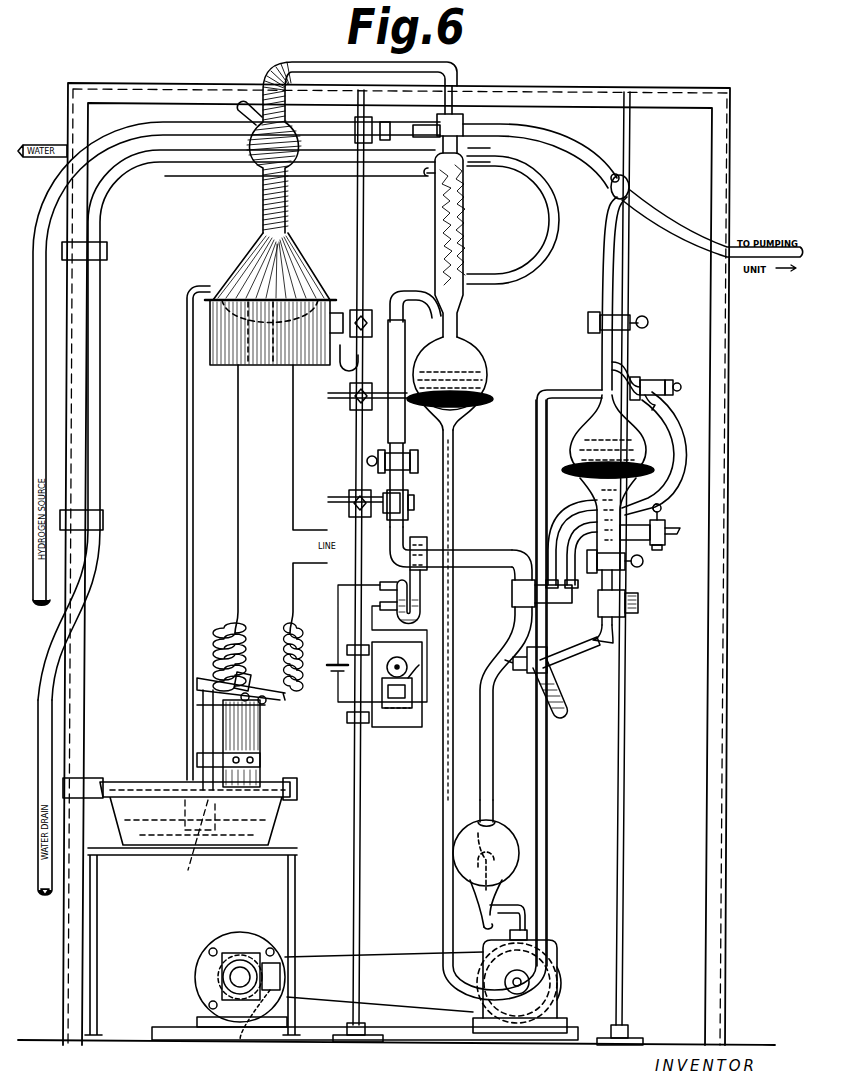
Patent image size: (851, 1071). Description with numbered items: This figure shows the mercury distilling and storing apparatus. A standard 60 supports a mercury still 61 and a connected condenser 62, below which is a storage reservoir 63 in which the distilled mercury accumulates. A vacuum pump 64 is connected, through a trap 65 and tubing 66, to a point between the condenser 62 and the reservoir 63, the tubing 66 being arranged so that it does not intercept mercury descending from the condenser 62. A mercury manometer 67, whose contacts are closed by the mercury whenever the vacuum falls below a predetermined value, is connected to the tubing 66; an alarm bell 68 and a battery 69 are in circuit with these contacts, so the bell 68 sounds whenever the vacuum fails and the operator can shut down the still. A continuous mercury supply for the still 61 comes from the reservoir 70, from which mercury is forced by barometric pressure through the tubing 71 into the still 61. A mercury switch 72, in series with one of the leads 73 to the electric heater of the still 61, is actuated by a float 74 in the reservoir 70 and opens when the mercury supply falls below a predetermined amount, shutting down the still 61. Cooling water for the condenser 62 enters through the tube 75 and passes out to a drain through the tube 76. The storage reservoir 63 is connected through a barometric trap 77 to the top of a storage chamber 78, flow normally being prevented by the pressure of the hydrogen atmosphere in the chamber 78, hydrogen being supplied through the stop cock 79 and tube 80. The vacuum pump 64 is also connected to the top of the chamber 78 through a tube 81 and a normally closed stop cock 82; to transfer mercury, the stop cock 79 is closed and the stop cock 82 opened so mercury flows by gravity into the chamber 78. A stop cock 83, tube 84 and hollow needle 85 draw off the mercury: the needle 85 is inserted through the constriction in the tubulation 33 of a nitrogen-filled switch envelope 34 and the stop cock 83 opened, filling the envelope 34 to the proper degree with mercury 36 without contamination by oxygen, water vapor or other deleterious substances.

The mercury still 61 is at (210, 335).
The drain tube 76 is at (340, 172).
The condenser 62 is at (435, 220).
The cooling water supply tube 75 is at (546, 220).
The tubing 66 is at (400, 292).
The storage reservoir 63 is at (472, 360).
The hydrogen supply tube 80 is at (602, 248).
The stop cock 79 is at (600, 326).
The stop cock 82 is at (657, 378).
The storage chamber 78 is at (590, 432).
The tube 81 is at (668, 448).
The standard 60 is at (357, 436).
The leads 73 is at (293, 452).
The tubing 71 is at (193, 507).
The mercury manometer 67 is at (420, 586).
The stop cock 83 is at (643, 562).
The tubulation 33 is at (575, 642).
The tube 84 is at (612, 632).
The hollow needle 85 is at (605, 645).
The switch envelope 34 is at (550, 680).
The mercury 36 is at (565, 712).
The mercury switch 72 is at (262, 680).
The battery 69 is at (333, 672).
The alarm bell 68 is at (397, 708).
The barometric trap 77 is at (443, 787).
The reservoir 70 is at (270, 822).
The float 74 is at (188, 870).
The trap 65 is at (493, 832).
The vacuum pump 64 is at (557, 950).